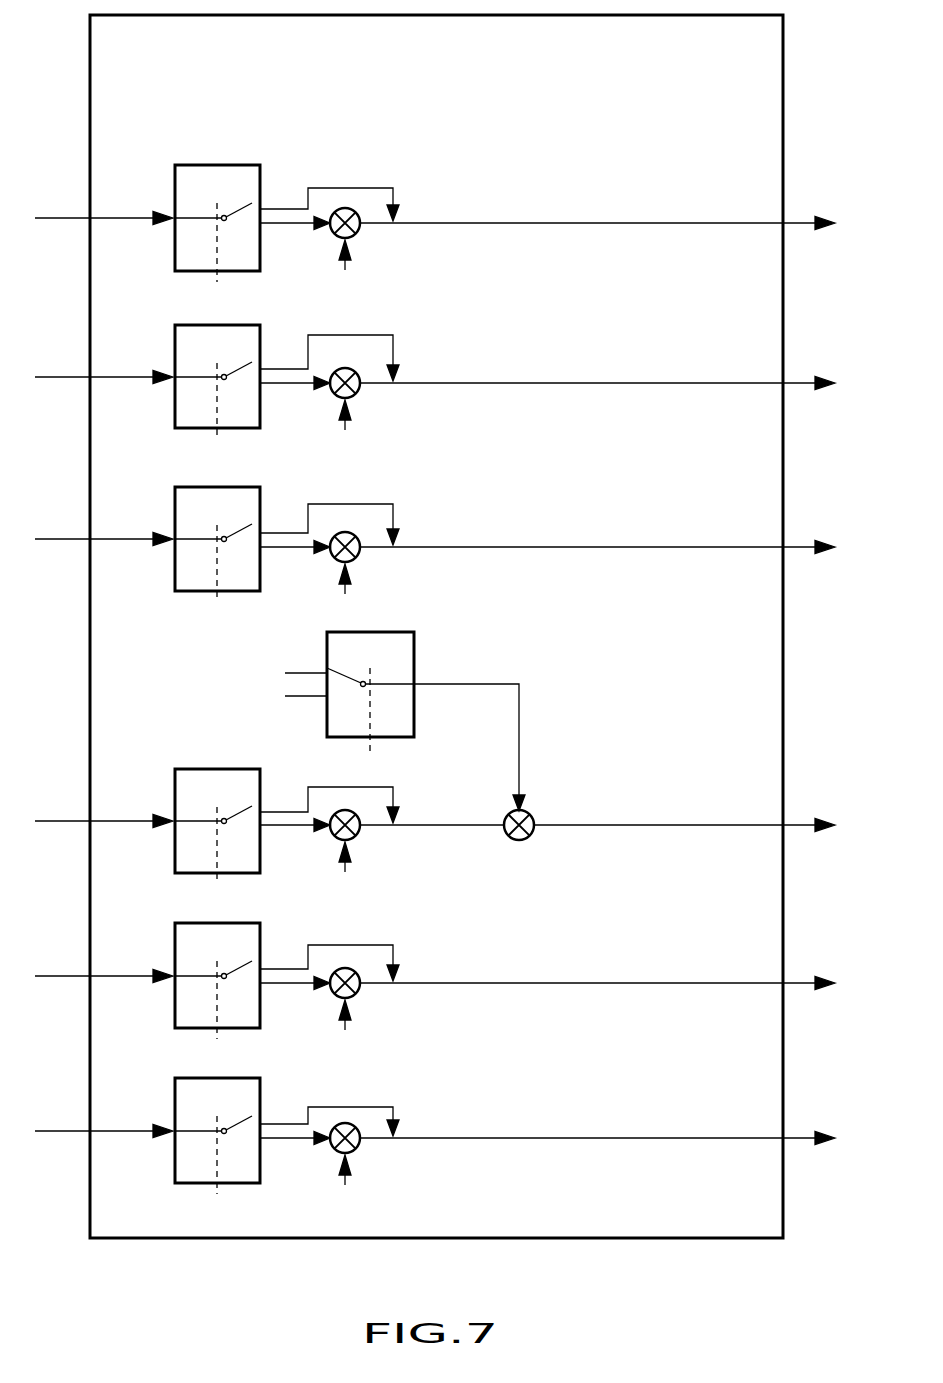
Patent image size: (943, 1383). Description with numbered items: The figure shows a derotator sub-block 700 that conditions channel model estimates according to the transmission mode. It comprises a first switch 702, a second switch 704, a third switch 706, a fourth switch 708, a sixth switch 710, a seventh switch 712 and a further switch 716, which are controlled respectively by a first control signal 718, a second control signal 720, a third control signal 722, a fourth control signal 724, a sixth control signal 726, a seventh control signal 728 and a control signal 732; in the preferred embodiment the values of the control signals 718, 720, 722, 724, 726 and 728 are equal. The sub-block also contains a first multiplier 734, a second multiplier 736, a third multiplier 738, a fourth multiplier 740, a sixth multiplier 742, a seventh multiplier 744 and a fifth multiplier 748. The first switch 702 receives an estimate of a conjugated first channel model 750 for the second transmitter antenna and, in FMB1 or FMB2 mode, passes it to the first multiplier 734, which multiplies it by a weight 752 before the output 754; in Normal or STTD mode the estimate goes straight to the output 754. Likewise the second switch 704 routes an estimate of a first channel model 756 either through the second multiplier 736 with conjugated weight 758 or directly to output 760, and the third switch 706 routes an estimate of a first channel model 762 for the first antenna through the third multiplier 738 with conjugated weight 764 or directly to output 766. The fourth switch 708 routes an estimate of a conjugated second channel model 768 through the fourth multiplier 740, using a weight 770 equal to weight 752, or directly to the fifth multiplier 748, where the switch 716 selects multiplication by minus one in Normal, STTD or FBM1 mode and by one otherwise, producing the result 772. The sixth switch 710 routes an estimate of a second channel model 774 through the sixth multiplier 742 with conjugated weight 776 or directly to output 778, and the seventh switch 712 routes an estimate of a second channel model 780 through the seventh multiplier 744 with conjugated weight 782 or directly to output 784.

The derotator sub-block 700 is at (740, 58).
The first switch 702 is at (182, 165).
The second switch 704 is at (182, 325).
The third switch 706 is at (182, 487).
The fourth switch 708 is at (182, 769).
The sixth switch 710 is at (182, 923).
The seventh switch 712 is at (182, 1078).
The switch 716 is at (414, 695).
The first control signal 718 is at (218, 280).
The second control signal 720 is at (218, 437).
The third control signal 722 is at (218, 600).
The fourth control signal 724 is at (218, 882).
The sixth control signal 726 is at (218, 1040).
The seventh control signal 728 is at (218, 1195).
The control signal 732 is at (372, 745).
The first multiplier 734 is at (356, 232).
The second multiplier 736 is at (356, 392).
The third multiplier 738 is at (356, 556).
The fourth multiplier 740 is at (356, 834).
The sixth multiplier 742 is at (356, 992).
The seventh multiplier 744 is at (356, 1147).
The fifth multiplier 748 is at (532, 838).
The estimate of a conjugated first channel model 750 is at (54, 218).
The weight 752 is at (345, 270).
The output 754 is at (680, 224).
The estimate of a first channel model 756 is at (54, 377).
The conjugated weight 758 is at (345, 430).
The output 760 is at (680, 384).
The estimate of a first channel model 762 is at (54, 539).
The conjugated weight 764 is at (345, 594).
The output 766 is at (680, 548).
The estimate of a conjugated second channel model 768 is at (54, 821).
The weight 770 is at (345, 872).
The result 772 is at (680, 826).
The estimate of a second channel model 774 is at (54, 976).
The conjugated weight 776 is at (345, 1030).
The output 778 is at (680, 984).
The estimate of a second channel model 780 is at (54, 1131).
The conjugated weight 782 is at (345, 1185).
The output 784 is at (680, 1139).